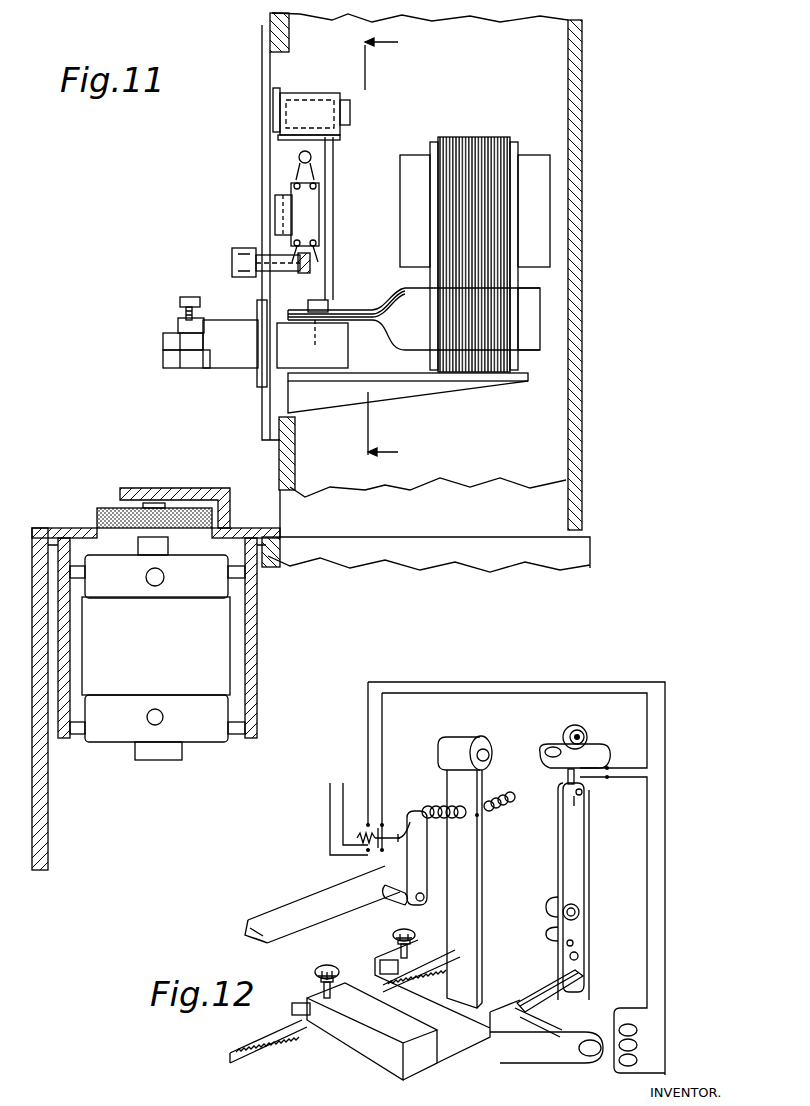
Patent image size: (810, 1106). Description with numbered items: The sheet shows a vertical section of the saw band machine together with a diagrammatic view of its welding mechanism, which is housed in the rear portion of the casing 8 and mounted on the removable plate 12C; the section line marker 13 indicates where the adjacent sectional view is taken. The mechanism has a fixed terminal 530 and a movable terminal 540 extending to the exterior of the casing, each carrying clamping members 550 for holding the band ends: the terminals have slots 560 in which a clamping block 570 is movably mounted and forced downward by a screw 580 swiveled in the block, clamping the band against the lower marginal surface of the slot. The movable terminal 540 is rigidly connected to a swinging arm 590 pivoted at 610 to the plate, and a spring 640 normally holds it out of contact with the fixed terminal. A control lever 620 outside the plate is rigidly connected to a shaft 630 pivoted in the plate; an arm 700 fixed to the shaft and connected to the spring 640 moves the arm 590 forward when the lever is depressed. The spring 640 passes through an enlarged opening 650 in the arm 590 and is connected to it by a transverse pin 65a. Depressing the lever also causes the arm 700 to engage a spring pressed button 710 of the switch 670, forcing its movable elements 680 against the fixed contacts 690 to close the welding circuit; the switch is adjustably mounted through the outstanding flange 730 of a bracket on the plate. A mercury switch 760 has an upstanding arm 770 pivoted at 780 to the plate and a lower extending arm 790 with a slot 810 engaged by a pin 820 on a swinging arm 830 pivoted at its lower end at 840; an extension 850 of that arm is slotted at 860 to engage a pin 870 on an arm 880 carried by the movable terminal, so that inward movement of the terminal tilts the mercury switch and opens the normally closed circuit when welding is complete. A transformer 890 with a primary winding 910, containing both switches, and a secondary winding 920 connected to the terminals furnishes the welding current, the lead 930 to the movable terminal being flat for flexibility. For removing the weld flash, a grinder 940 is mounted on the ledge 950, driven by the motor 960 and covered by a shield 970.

In FIG. 11, the casing 8 is at (583, 108).
In FIG. 11, the removable plate 12C is at (264, 128).
In FIG. 11, the section line 13 is at (394, 248).
In FIG. 11, the fixed terminal 530 is at (224, 362).
In FIG. 12, the fixed terminal 530 is at (345, 1043).
In FIG. 12, the movable terminal 540 is at (460, 1018).
In FIG. 11, the clamping members 550 is at (168, 357).
In FIG. 12, the clamping members 550 is at (284, 1021).
In FIG. 11, the slots 560 is at (178, 322).
In FIG. 12, the slots 560 is at (303, 1000).
In FIG. 11, the clamping block 570 is at (165, 340).
In FIG. 12, the clamping block 570 is at (293, 1010).
In FIG. 11, the screws 580 is at (185, 296).
In FIG. 12, the screws 580 is at (395, 933).
In FIG. 11, the swinging arm 590 is at (332, 174).
In FIG. 12, the swinging arm 590 is at (470, 893).
In FIG. 11, the pivot 610 is at (350, 108).
In FIG. 12, the pivot 610 is at (488, 752).
In FIG. 11, the control lever 620 is at (244, 250).
In FIG. 12, the control lever 620 is at (268, 917).
In FIG. 11, the shaft 630 is at (266, 276).
In FIG. 12, the shaft 630 is at (401, 896).
In FIG. 11, the spring 640 is at (298, 160).
In FIG. 12, the spring 640 is at (498, 796).
In FIG. 12, the enlarged opening 650 is at (462, 816).
In FIG. 12, the pin 65a is at (535, 831).
In FIG. 11, the switch 670 is at (312, 200).
In FIG. 12, the switch 670 is at (358, 812).
In FIG. 12, the movable elements 680 is at (383, 823).
In FIG. 12, the fixed contacts 690 is at (369, 823).
In FIG. 11, the arm 700 is at (312, 155).
In FIG. 12, the arm 700 is at (426, 860).
In FIG. 12, the spring pressed button 710 is at (396, 836).
In FIG. 11, the outstanding flange 730 is at (275, 208).
In FIG. 12, the mercury switch 760 is at (592, 753).
In FIG. 12, the upstanding arm 770 is at (579, 727).
In FIG. 12, the pivot 780 is at (588, 731).
In FIG. 12, the lower extending arm 790 is at (585, 786).
In FIG. 12, the slot 810 is at (575, 806).
In FIG. 12, the pin 820 is at (581, 796).
In FIG. 12, the swinging arm 830 is at (578, 856).
In FIG. 12, the pivot 840 is at (578, 905).
In FIG. 12, the extension 850 is at (580, 915).
In FIG. 12, the slot 860 is at (578, 958).
In FIG. 12, the pin 870 is at (574, 944).
In FIG. 12, the arm 880 is at (533, 992).
In FIG. 11, the transformer 890 is at (472, 137).
In FIG. 12, the transformer 890 is at (603, 1064).
In FIG. 12, the primary winding 910 is at (645, 1028).
In FIG. 12, the secondary winding 920 is at (588, 1032).
In FIG. 11, the lead 930 is at (417, 340).
In FIG. 12, the lead 930 is at (520, 1028).
In FIG. 11, the grinder 940 is at (106, 509).
In FIG. 11, the ledge 950 is at (68, 530).
In FIG. 11, the motor 960 is at (108, 738).
In FIG. 11, the shield 970 is at (130, 490).